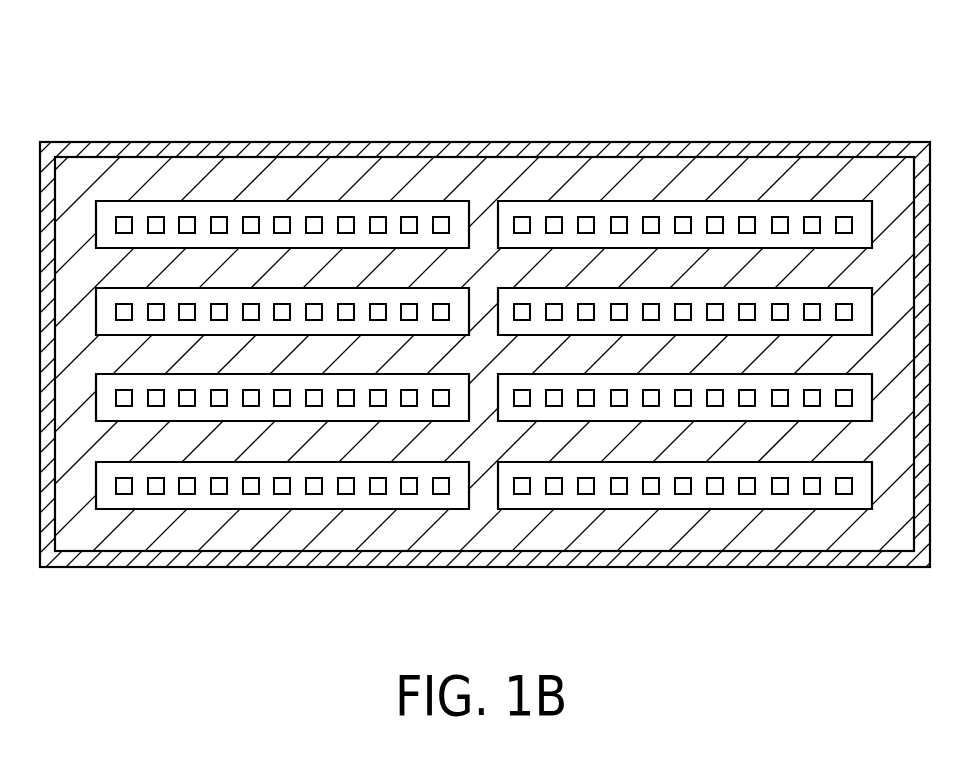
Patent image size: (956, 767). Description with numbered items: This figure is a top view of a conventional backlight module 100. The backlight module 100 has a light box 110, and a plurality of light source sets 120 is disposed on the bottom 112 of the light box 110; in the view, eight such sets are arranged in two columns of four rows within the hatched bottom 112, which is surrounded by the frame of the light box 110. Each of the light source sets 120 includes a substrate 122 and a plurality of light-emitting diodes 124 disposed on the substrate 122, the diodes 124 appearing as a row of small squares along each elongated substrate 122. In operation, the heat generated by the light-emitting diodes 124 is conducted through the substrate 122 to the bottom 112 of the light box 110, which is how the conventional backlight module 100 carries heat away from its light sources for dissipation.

The backlight module 100 is at (485, 343).
The light box 110 is at (777, 553).
The bottom 112 is at (760, 173).
The light source set 120 is at (484, 264).
The substrate 122 is at (243, 205).
The light-emitting diode 124 is at (190, 217).